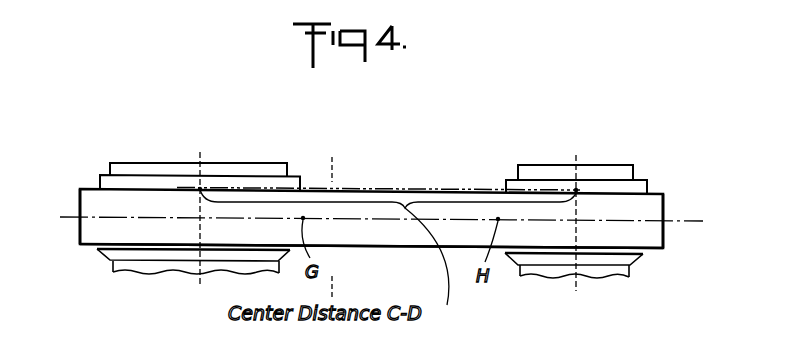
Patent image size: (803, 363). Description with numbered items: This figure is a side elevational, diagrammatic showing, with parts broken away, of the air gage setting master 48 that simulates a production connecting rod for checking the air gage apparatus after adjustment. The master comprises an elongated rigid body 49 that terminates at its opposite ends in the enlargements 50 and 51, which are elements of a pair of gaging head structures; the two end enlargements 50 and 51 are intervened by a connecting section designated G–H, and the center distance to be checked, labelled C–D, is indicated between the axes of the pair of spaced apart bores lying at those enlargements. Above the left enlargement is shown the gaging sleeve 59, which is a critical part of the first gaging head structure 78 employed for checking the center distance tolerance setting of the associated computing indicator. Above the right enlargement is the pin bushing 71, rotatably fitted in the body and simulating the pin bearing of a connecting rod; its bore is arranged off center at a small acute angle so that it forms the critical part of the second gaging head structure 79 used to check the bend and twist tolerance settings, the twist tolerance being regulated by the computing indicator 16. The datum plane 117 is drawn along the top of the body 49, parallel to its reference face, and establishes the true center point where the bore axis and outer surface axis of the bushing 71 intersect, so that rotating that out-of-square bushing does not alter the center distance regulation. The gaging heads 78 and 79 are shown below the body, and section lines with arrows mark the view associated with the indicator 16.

The air gage setting master 48 is at (670, 198).
The body 49 is at (415, 248).
The end enlargement 50 is at (80, 234).
The end enlargement 51 is at (665, 231).
The gaging sleeve 59 is at (120, 164).
The pin bushing 71 is at (635, 166).
The first gaging head structure 78 is at (109, 259).
The second gaging head structure 79 is at (640, 266).
The datum plane 117 is at (456, 188).
The computing indicator 16 is at (327, 288).